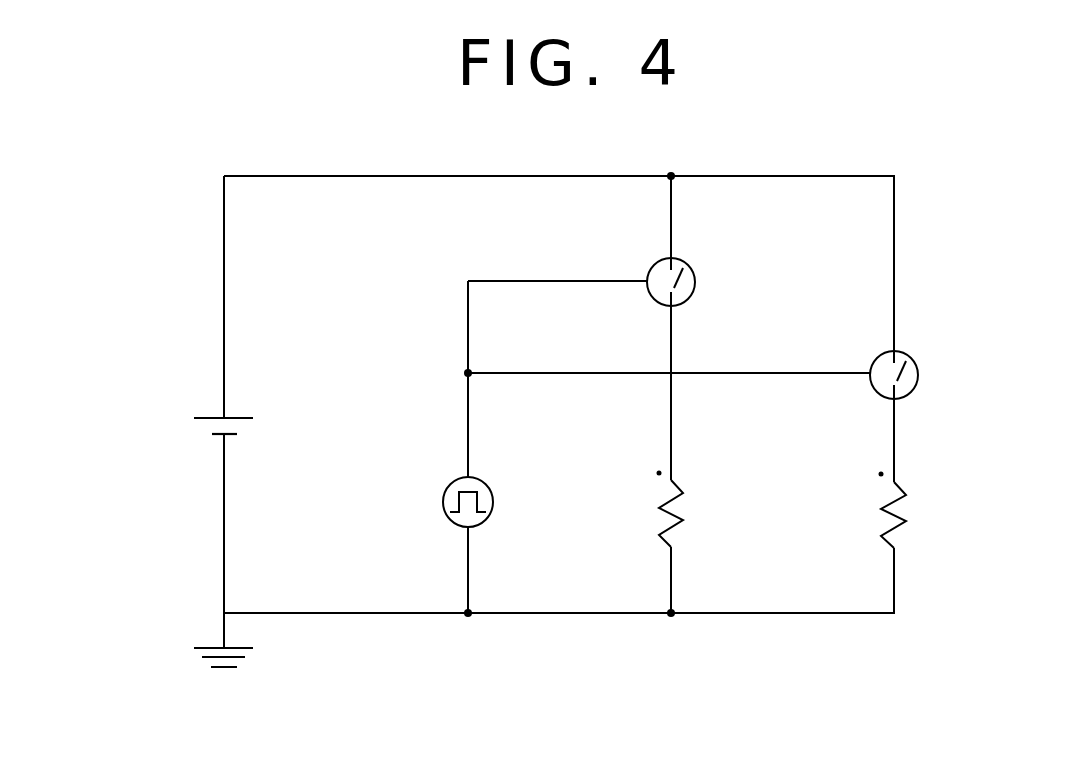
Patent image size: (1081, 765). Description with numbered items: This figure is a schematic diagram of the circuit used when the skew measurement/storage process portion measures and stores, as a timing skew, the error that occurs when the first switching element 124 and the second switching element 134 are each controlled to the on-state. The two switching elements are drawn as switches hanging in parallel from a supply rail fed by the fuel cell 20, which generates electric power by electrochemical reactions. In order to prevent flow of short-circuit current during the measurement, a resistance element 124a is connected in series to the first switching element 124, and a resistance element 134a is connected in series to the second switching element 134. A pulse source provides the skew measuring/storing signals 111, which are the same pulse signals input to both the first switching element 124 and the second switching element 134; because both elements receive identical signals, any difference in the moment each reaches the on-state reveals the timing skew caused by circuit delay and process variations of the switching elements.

The fuel cell 20 is at (245, 409).
The second switching element 134 is at (695, 268).
The first switching element 124 is at (918, 362).
The skew measuring/storing signals 111 is at (492, 485).
The resistance element 134a is at (683, 520).
The resistance element 124a is at (905, 520).